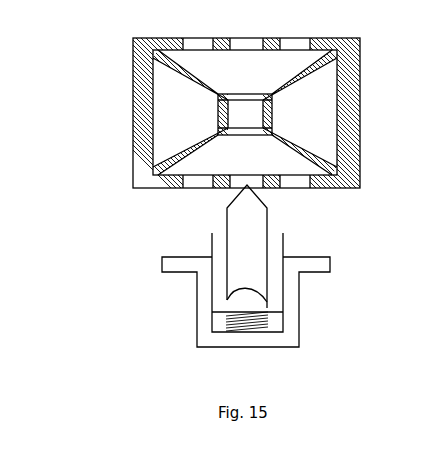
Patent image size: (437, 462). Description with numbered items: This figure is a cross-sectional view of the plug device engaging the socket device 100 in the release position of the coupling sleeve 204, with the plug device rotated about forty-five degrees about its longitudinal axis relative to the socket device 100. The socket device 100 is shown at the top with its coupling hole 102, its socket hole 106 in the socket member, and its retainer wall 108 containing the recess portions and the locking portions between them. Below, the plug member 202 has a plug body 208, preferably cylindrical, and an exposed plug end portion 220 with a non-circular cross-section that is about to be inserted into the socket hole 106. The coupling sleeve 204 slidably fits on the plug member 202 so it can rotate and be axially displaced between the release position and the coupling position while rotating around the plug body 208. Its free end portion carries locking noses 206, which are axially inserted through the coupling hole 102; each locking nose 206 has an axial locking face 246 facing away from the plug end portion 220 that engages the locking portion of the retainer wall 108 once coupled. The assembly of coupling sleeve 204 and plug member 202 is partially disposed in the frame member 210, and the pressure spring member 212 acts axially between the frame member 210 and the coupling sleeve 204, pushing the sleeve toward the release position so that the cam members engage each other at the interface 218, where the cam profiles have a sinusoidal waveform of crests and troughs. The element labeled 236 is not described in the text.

The socket device 100 is at (360, 52).
The coupling hole 102 is at (281, 187).
The socket hole 106 is at (273, 115).
The retainer wall 108 is at (323, 188).
The plug member 202 is at (226, 216).
The coupling sleeve 204 is at (214, 274).
The locking nose 206 is at (285, 234).
The plug body 208 is at (238, 250).
The frame member 210 is at (299, 287).
The pressure spring member 212 is at (227, 328).
The interface 218 is at (270, 322).
The exposed plug end portion 220 is at (235, 196).
The solder fillet 236 is at (265, 306).
The axial locking face 246 is at (212, 234).